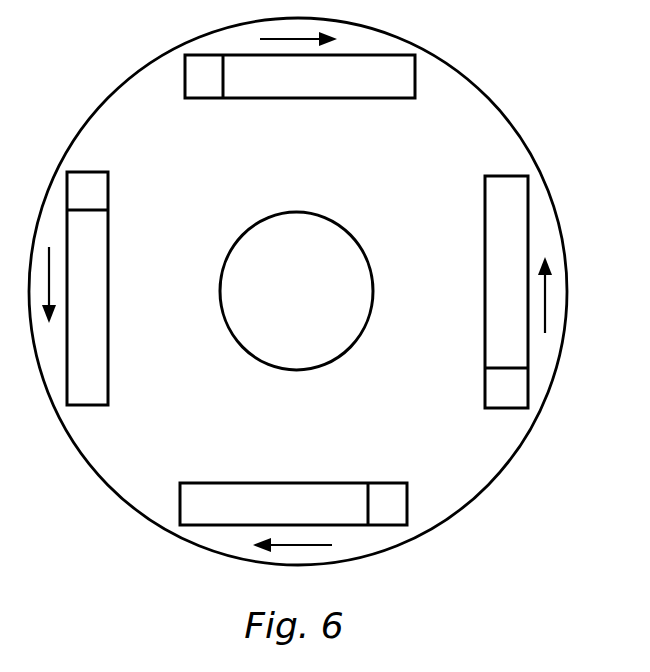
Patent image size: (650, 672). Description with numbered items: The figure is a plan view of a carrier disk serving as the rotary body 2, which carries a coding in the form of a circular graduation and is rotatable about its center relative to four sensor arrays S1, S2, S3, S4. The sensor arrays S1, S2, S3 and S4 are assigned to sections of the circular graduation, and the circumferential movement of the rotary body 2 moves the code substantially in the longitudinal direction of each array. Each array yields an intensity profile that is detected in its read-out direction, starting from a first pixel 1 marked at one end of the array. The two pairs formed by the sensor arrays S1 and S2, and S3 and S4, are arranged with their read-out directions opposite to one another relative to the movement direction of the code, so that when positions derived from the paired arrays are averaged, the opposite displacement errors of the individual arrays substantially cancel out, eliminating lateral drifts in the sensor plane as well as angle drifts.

The first pixel 1 is at (303, 290).
The rotary body 2 is at (392, 192).
The sensor array S1 is at (300, 81).
The sensor array S2 is at (512, 292).
The sensor array S3 is at (293, 500).
The sensor array S4 is at (103, 288).